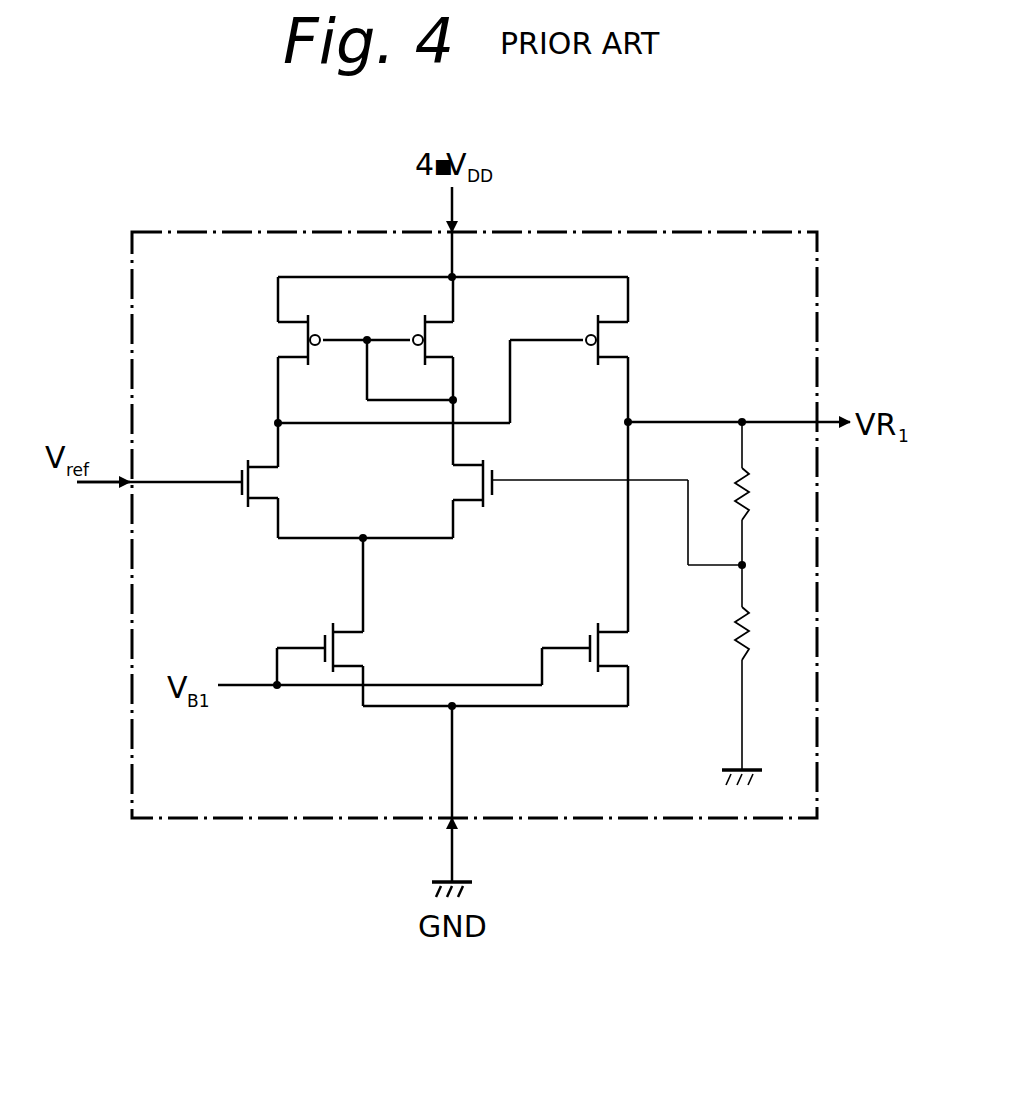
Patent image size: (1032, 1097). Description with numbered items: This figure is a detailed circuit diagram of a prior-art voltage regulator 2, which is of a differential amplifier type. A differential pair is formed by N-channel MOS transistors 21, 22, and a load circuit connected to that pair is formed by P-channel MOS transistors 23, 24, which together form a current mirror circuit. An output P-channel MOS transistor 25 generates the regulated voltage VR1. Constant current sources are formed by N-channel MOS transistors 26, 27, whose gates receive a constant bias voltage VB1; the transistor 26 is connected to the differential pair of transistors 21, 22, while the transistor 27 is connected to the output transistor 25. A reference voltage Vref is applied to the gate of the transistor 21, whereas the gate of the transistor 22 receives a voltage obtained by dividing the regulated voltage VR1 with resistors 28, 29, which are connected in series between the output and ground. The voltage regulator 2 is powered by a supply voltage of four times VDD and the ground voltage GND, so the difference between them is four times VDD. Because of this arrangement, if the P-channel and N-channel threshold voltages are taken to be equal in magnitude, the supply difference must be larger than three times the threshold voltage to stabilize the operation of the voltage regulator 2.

The voltage regulator 2 is at (663, 230).
The N-channel MOS transistor 21 is at (238, 472).
The N-channel MOS transistor 22 is at (463, 486).
The P-channel MOS transistor 23 is at (288, 342).
The P-channel MOS transistor 24 is at (446, 342).
The output P-channel MOS transistor 25 is at (632, 342).
The N-channel MOS transistor 26 is at (318, 640).
The N-channel MOS transistor 27 is at (586, 640).
The resistor 28 is at (754, 492).
The resistor 29 is at (752, 640).